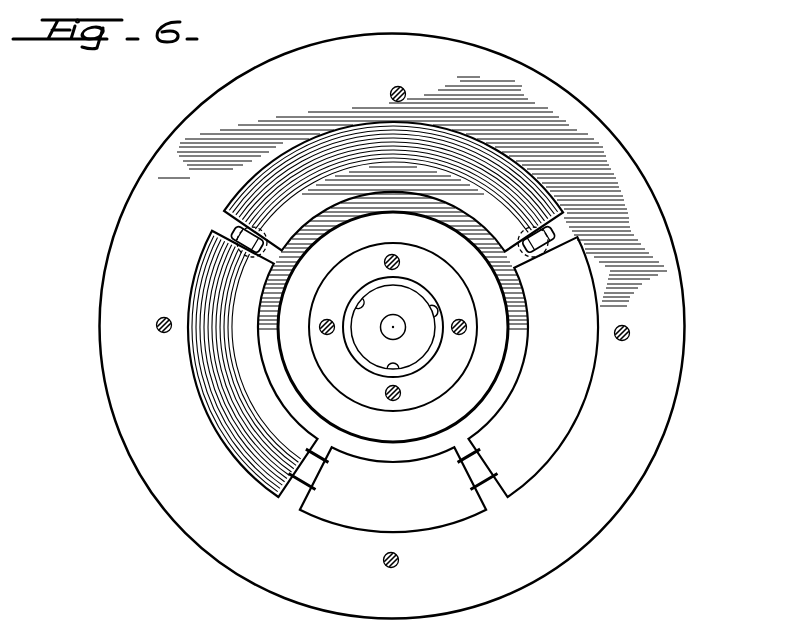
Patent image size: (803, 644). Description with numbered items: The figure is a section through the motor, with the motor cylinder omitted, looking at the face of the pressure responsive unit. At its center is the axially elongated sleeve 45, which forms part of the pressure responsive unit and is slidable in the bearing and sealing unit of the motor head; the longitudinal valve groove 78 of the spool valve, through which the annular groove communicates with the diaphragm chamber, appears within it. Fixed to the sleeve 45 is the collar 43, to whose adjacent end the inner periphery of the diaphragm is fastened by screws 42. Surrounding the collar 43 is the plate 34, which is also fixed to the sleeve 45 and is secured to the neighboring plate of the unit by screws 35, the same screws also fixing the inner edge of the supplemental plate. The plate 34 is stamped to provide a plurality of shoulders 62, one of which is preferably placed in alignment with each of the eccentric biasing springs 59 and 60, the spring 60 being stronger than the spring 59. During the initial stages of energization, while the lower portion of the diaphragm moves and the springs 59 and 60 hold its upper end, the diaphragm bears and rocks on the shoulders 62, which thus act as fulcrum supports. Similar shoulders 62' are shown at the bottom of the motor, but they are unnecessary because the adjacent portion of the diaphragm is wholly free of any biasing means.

The plate 34 is at (611, 146).
The screws 35 is at (399, 86).
The screws 42 is at (385, 262).
The collar 43 is at (406, 436).
The sleeve 45 is at (360, 360).
The spring 59 is at (252, 262).
The spring 60 is at (529, 267).
The shoulders 62 is at (380, 239).
The shoulders 62' is at (406, 478).
The longitudinal valve groove 78 is at (364, 304).